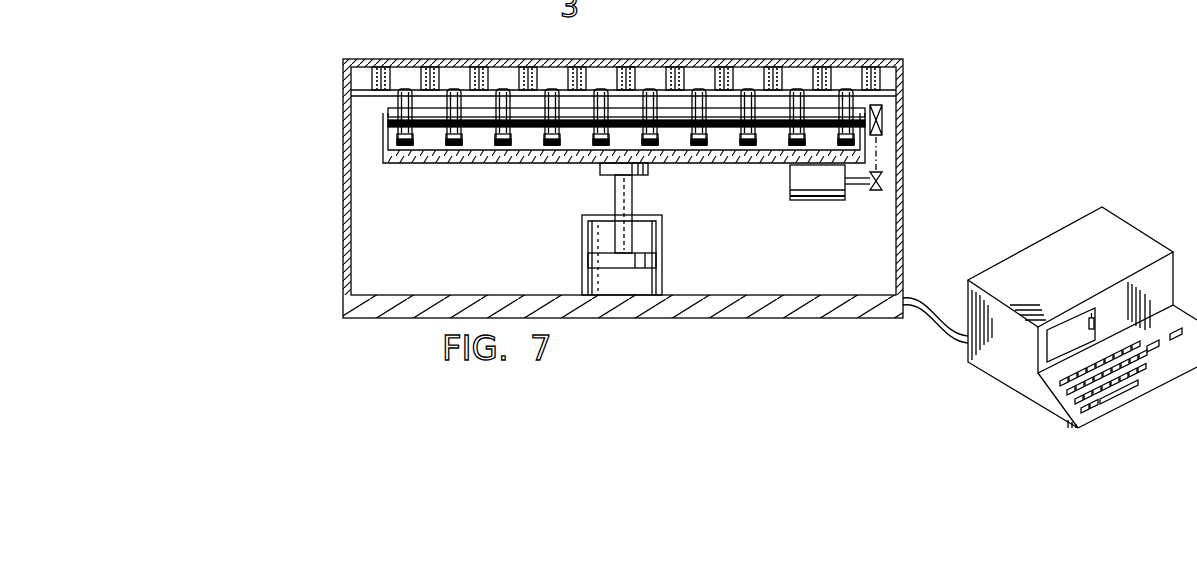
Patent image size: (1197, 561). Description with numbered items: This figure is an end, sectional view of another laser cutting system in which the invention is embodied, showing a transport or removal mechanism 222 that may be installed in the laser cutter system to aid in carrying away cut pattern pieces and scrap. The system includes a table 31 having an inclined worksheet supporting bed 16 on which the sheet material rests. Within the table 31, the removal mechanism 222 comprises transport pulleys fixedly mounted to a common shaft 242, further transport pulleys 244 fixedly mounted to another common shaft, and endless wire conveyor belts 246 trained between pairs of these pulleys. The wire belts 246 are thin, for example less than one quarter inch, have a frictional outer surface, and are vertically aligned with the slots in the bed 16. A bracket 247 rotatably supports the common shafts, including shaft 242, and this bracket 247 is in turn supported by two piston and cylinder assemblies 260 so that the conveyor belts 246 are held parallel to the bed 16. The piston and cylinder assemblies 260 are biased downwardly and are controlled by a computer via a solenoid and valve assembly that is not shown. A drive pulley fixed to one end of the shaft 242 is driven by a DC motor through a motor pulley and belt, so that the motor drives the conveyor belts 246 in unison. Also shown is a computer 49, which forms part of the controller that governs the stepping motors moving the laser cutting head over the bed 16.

The table 31 is at (342, 108).
The worksheet supporting bed 16 is at (827, 68).
The transport pulleys 244 is at (441, 138).
The common shaft 242 is at (480, 128).
The endless wire conveyor belts 246 is at (502, 88).
The transport or removal mechanism 222 is at (548, 165).
The bracket 247 is at (707, 165).
The piston and cylinder assemblies 260 is at (663, 233).
The computer 49 is at (1025, 232).